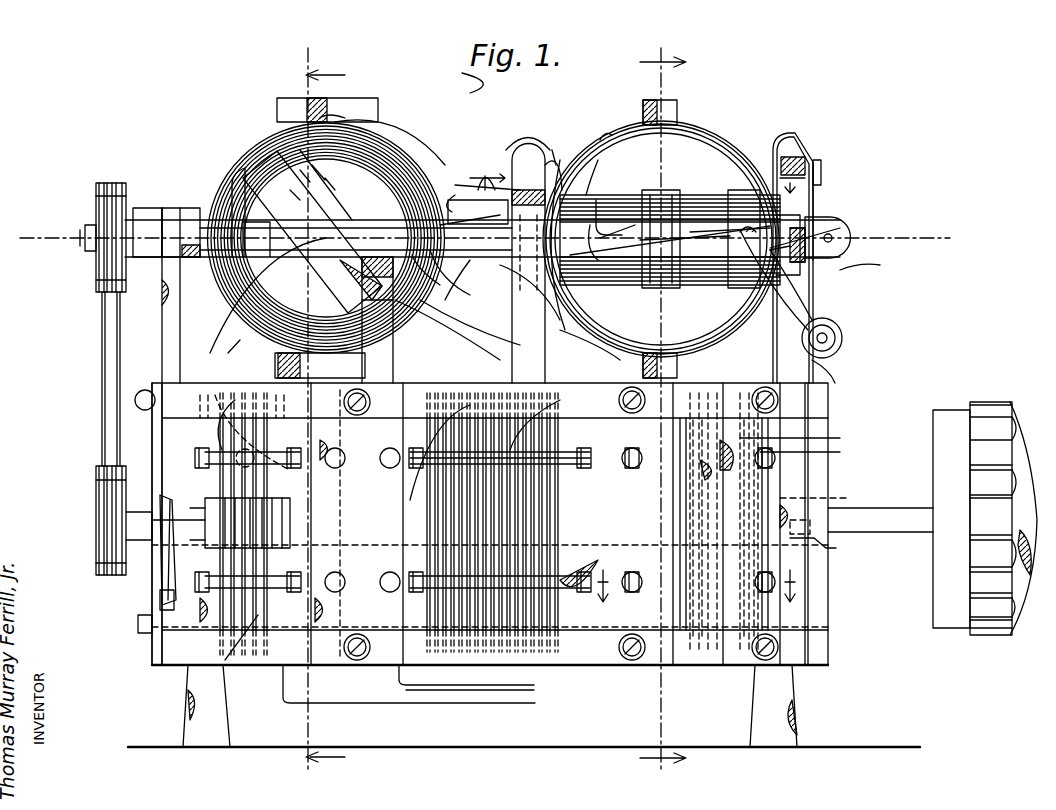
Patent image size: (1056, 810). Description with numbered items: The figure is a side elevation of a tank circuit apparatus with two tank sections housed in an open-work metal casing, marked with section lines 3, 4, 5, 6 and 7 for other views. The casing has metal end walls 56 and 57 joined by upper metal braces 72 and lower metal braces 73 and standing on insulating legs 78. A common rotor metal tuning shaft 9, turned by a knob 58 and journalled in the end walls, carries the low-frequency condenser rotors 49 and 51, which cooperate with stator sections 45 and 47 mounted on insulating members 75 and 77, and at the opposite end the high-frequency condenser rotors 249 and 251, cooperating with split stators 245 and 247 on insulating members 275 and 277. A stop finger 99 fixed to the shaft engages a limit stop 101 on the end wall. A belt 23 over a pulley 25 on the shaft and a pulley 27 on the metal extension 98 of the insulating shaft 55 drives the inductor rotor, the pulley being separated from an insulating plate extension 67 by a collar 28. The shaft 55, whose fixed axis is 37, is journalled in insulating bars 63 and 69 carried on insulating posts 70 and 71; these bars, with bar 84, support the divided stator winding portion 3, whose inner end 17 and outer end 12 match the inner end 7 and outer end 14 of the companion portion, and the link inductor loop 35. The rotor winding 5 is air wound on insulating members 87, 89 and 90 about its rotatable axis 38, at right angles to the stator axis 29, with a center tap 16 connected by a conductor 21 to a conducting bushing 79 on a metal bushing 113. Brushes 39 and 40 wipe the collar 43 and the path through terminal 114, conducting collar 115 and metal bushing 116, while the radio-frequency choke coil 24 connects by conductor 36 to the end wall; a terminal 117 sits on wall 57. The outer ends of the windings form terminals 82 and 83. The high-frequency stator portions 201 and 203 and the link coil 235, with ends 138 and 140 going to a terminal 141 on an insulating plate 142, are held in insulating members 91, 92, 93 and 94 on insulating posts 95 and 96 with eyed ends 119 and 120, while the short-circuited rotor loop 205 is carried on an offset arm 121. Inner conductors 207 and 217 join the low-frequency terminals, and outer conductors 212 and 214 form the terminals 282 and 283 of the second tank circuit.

The stator inductor-winding portion 3 is at (697, 595).
The section line 4- 4 is at (638, 170).
The rotor winding 5 is at (622, 195).
The section line 6- 6 is at (663, 407).
The inner end 7 is at (551, 133).
The rotor metal tuning shaft 9 is at (888, 532).
The outer end 12 is at (600, 353).
The outer end 14 is at (792, 298).
The center tap 16 is at (582, 282).
The inner end 17 is at (782, 138).
The conductor 21 is at (640, 280).
The belt 23 is at (101, 346).
The radio-frequency choke coil 24 is at (840, 328).
The pulley 25 is at (97, 470).
The pulley 27 is at (97, 183).
The bushing or collar 28 is at (147, 213).
The fixed axis 29 is at (680, 225).
The link inductor loop 35 is at (700, 118).
The conductor 36 is at (845, 353).
The fixed axis 37 is at (22, 238).
The rotatable axis 38 is at (662, 300).
The brush or wiping blade 39 is at (520, 146).
The brush or wiping blade 40 is at (810, 147).
The collar or bushing 43 is at (840, 225).
The stationary-condenser plate section 45 is at (440, 486).
The stationary-condenser plate section 47 is at (700, 665).
The rotary-condenser plate section 49 is at (425, 613).
The rotary-condenser plate section 51 is at (805, 424).
The insulating shaft 55 is at (618, 134).
The metal end wall 56 is at (808, 476).
The metal end wall 57 is at (152, 448).
The knob 58 is at (1005, 400).
The insulating bar 63 is at (802, 238).
The insulating plate extension 67 is at (166, 342).
The insulating bar 69 is at (552, 180).
The insulating pillar or post 70 is at (873, 262).
The insulating pillar or post 71 is at (516, 298).
The upper metal brace 72 is at (515, 378).
The lower metal brace 73 is at (290, 672).
The insulating member 75 is at (545, 298).
The insulating member 77 is at (610, 662).
The insulating leg 78 is at (190, 728).
The conducting bushing 79 is at (712, 210).
The terminal 82 is at (590, 458).
The terminal 83 is at (815, 443).
The insulating bar 84 is at (664, 102).
The insulating member 87 is at (575, 195).
The insulating member 89 is at (746, 190).
The insulating member 90 is at (650, 288).
The insulating member 91 is at (282, 105).
The insulating member 92 is at (275, 360).
The insulating member 93 is at (452, 200).
The insulating member 94 is at (324, 276).
The insulating post 95 is at (398, 358).
The insulating post 96 is at (230, 346).
The metal extension 98 is at (210, 230).
The stop finger 99 is at (825, 494).
The limit stop 101 is at (829, 539).
The metal bushing 113 is at (812, 215).
The terminal 114 is at (600, 198).
The conducting collar 115 is at (658, 215).
The metal bushing 116 is at (590, 130).
The terminal 117 is at (165, 573).
The end 119 is at (452, 279).
The end 120 is at (184, 218).
The offset arm 121 is at (236, 190).
The end 138 is at (362, 304).
The end 140 is at (447, 290).
The terminal 141 is at (480, 190).
The insulating plate 142 is at (552, 140).
The inductor-winding portion 201 is at (240, 163).
The inductor-winding portion 203 is at (388, 140).
The rotor winding 205 is at (360, 146).
The inner end conductor 207 is at (470, 322).
The outer end conductor 212 is at (255, 295).
The outer end conductor 214 is at (250, 520).
The inner end conductor 217 is at (420, 393).
The link coil 235 is at (378, 115).
The split stator 245 is at (212, 482).
The split stator 247 is at (322, 553).
The rotor 249 is at (258, 613).
The rotor 251 is at (320, 488).
The insulating member 275 is at (205, 454).
The insulating member 277 is at (330, 672).
The terminal 282 is at (195, 403).
The terminal 283 is at (400, 398).